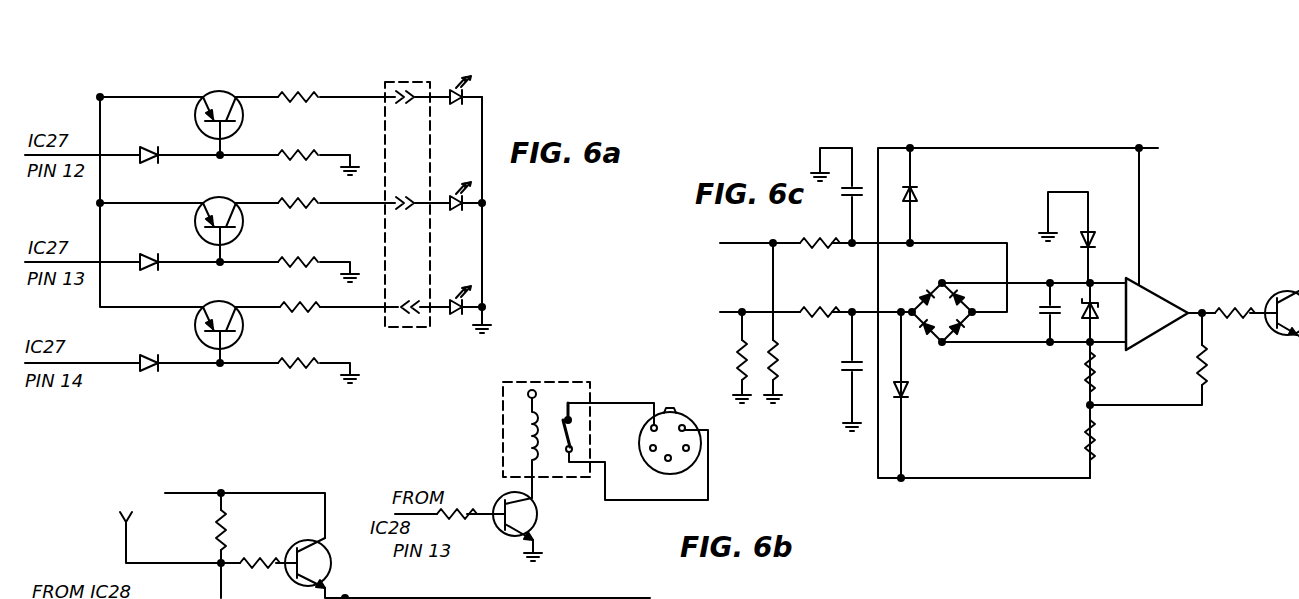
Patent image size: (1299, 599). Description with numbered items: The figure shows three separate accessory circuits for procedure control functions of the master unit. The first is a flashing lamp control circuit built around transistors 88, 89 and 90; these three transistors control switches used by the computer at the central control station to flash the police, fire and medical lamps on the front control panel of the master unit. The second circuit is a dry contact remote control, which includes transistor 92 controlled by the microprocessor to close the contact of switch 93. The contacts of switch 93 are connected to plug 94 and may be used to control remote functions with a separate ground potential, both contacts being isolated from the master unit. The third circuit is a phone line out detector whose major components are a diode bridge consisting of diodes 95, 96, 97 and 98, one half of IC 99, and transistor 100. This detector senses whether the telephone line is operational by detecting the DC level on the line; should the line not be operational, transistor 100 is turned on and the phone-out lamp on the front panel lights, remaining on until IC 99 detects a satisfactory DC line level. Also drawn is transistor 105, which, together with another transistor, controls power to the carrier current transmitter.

In FIG. 6A, the transistor 88 is at (196, 122).
In FIG. 6A, the transistor 89 is at (195, 222).
In FIG. 6A, the transistor 90 is at (195, 322).
In FIG. 6B, the transistor 92 is at (537, 505).
In FIG. 6B, the switch 93 is at (575, 428).
In FIG. 6B, the plug 94 is at (690, 412).
In FIG. 6C, the diode 95 is at (925, 292).
In FIG. 6C, the diode 96 is at (932, 330).
In FIG. 6C, the diode 97 is at (960, 292).
In FIG. 6C, the diode 98 is at (960, 332).
In FIG. 6C, the IC 99 is at (1150, 292).
In FIG. 6C, the transistor 100 is at (1272, 340).
In FIG. 6B, the transistor 105 is at (330, 583).